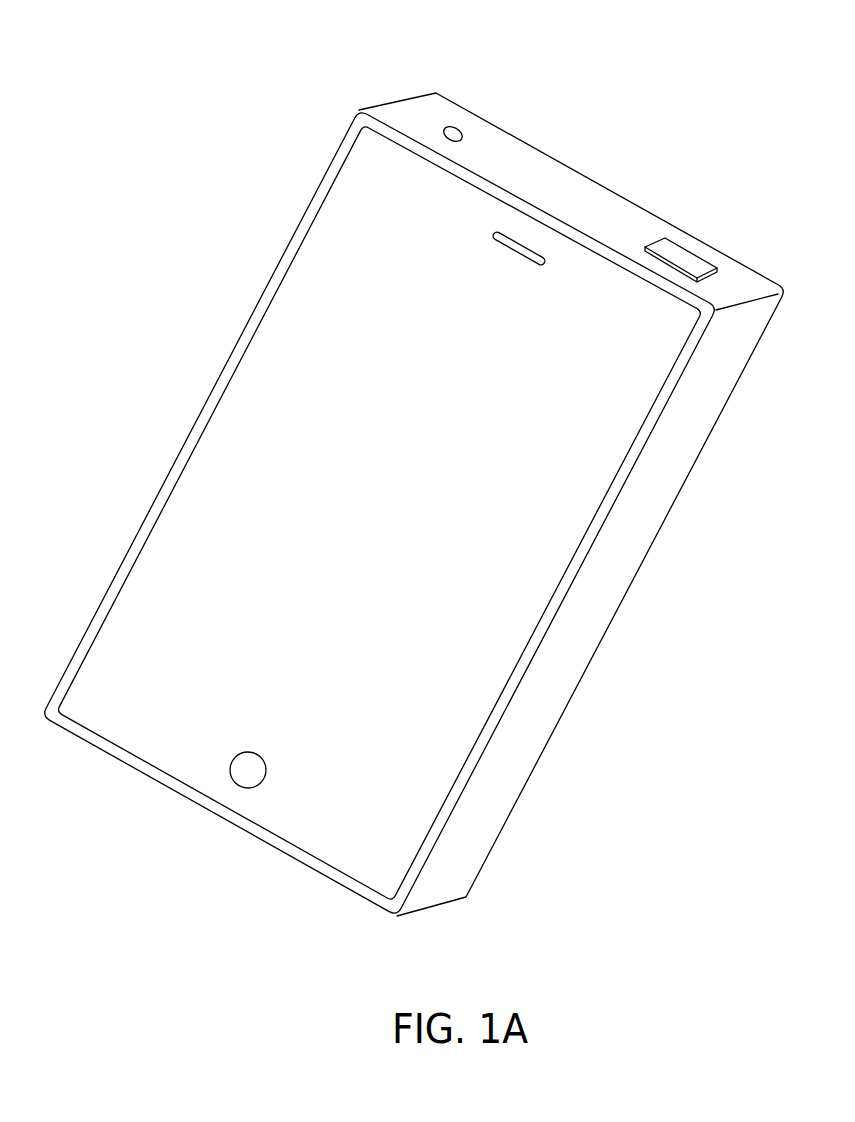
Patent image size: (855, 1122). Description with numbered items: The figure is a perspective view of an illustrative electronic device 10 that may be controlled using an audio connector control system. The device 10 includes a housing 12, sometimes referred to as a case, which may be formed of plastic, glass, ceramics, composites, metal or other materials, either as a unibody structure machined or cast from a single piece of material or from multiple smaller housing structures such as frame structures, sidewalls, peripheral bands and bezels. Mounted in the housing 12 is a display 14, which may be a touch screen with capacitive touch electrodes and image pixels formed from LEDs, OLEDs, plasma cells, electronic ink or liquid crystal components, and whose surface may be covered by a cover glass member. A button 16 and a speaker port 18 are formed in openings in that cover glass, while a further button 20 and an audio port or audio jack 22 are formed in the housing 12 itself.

The electronic device 10 is at (670, 88).
The housing 12 is at (612, 572).
The display 14 is at (245, 448).
The button 16 is at (242, 790).
The speaker port 18 is at (520, 240).
The button 20 is at (683, 257).
The audio port 22 is at (456, 123).